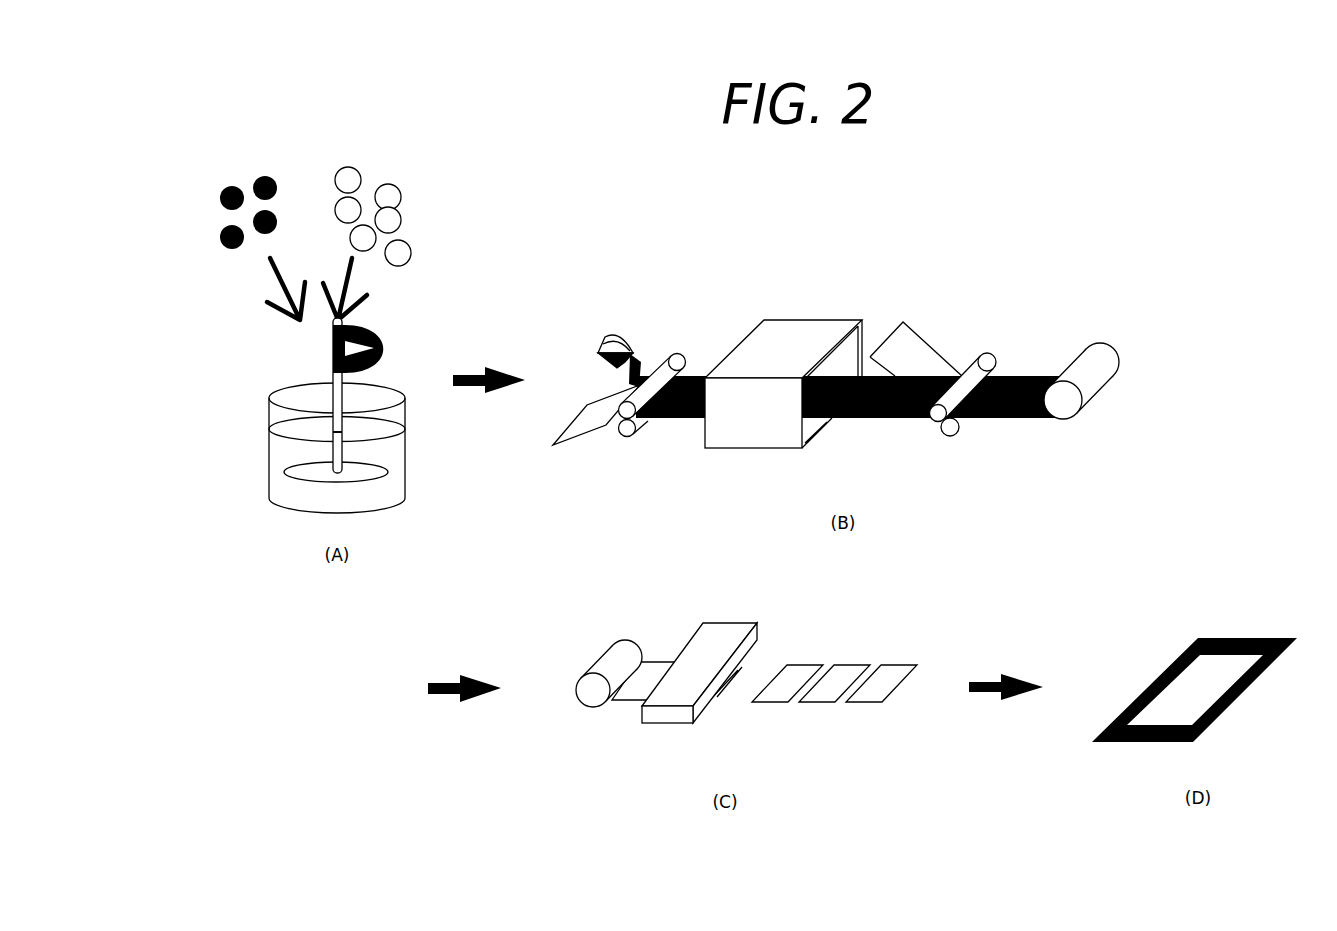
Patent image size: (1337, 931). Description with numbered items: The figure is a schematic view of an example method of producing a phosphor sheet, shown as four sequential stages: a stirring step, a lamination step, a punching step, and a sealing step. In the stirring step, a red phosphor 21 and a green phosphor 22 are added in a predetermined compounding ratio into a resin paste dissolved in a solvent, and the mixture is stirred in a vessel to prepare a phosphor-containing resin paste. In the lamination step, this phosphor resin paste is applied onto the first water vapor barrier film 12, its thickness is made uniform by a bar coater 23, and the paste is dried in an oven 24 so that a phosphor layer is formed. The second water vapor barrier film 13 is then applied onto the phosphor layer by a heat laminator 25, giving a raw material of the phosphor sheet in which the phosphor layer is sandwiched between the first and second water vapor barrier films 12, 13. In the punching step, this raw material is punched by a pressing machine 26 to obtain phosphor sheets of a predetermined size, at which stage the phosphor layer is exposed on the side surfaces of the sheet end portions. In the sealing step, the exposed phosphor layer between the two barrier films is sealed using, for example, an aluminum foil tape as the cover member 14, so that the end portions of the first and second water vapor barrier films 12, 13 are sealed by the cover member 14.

The red phosphor 21 is at (227, 183).
The green phosphor 22 is at (345, 165).
The first water vapor barrier film 12 is at (590, 435).
The bar coater 23 is at (675, 352).
The oven 24 is at (757, 452).
The second water vapor barrier film 13 is at (895, 322).
The heat laminator 25 is at (965, 427).
The pressing machine 26 is at (667, 728).
The cover member 14 is at (1232, 638).